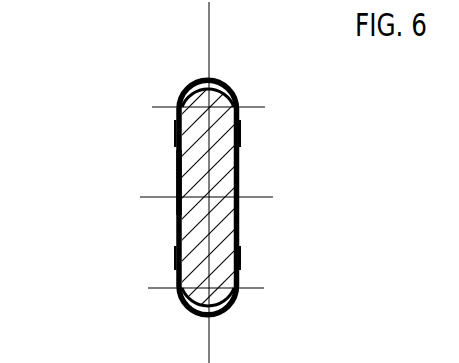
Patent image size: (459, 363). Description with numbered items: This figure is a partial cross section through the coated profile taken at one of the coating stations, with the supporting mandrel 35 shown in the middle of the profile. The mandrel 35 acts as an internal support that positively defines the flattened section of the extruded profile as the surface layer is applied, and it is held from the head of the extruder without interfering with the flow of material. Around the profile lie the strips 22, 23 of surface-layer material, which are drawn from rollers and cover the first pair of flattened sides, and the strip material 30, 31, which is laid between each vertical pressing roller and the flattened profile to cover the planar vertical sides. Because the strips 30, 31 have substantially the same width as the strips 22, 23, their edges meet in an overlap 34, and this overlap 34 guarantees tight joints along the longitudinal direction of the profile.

The strip 22 is at (239, 223).
The strip 23 is at (176, 183).
The strip material 30 is at (193, 80).
The strip material 31 is at (197, 314).
The overlap 34 is at (176, 133).
The mandrel 35 is at (222, 161).